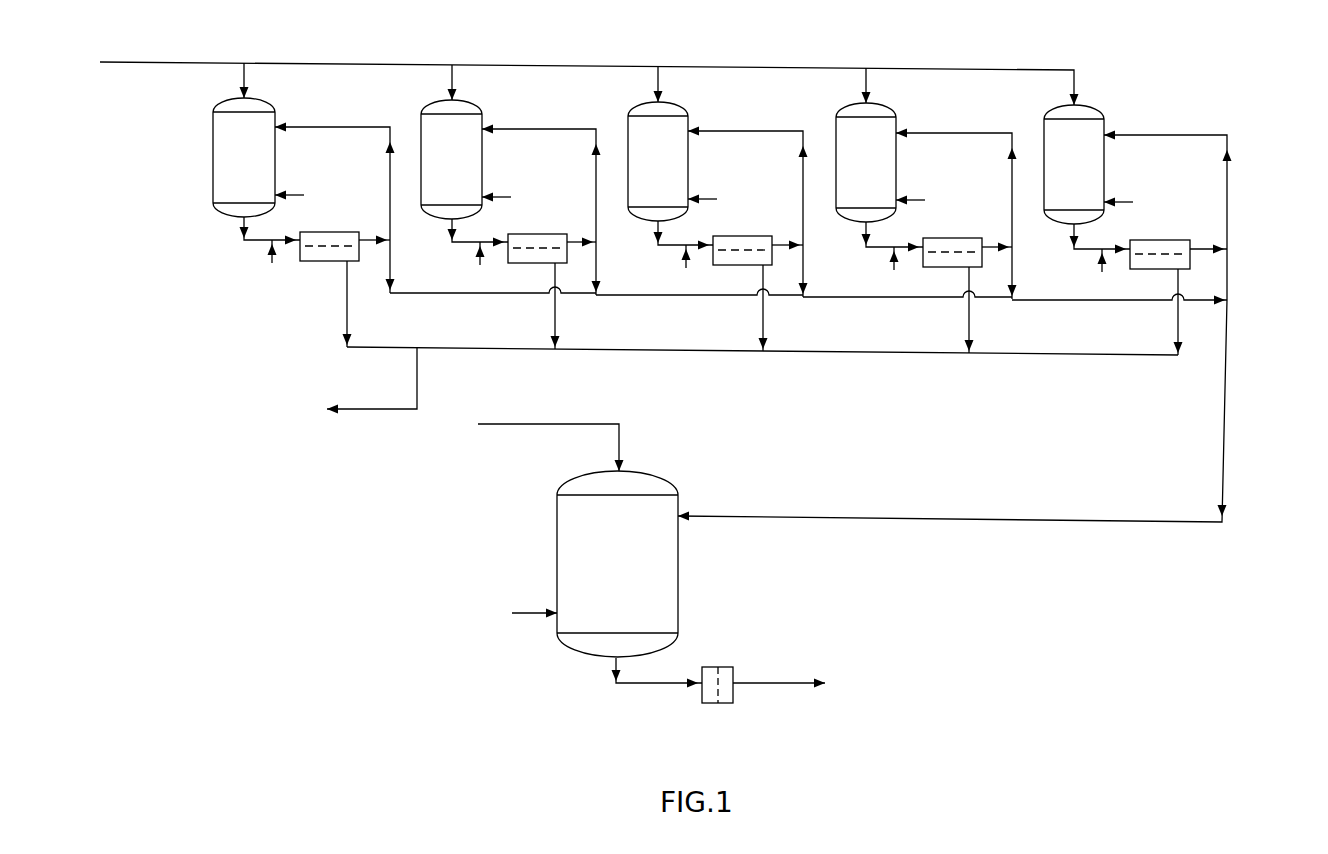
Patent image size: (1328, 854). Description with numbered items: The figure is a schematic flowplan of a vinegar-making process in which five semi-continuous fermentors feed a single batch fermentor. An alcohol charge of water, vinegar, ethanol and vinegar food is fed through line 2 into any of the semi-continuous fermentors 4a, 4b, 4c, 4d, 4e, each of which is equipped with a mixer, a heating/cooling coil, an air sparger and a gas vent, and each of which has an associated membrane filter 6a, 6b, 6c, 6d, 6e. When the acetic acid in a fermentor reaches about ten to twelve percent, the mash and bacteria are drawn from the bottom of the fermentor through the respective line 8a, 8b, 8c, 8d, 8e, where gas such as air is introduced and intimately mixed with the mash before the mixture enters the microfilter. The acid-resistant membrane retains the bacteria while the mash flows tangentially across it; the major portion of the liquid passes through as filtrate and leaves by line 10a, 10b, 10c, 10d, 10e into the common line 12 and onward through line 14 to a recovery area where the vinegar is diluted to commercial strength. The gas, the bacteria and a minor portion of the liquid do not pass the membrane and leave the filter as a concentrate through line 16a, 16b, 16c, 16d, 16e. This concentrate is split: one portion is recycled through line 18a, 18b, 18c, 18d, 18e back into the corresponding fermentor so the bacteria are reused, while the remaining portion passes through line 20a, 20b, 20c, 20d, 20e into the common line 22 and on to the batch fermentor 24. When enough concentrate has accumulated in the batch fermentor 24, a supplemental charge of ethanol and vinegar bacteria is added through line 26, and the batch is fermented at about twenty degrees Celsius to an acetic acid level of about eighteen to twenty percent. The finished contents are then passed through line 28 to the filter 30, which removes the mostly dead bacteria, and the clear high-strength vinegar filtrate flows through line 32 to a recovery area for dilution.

The alcohol charge line 2 is at (408, 63).
The semi-continuous fermentor 4a is at (213, 160).
The semi-continuous fermentor 4b is at (482, 155).
The semi-continuous fermentor 4c is at (688, 159).
The semi-continuous fermentor 4d is at (896, 160).
The semi-continuous fermentor 4e is at (1104, 162).
The membrane filter 6a is at (309, 232).
The membrane filter 6b is at (513, 234).
The membrane filter 6c is at (718, 236).
The membrane filter 6d is at (928, 238).
The membrane filter 6e is at (1135, 240).
The mash transfer line 8a is at (250, 243).
The mash transfer line 8b is at (457, 245).
The mash transfer line 8c is at (658, 248).
The mash transfer line 8d is at (866, 250).
The mash transfer line 8e is at (1074, 252).
The filtrate line 10a is at (345, 311).
The filtrate line 10b is at (555, 273).
The filtrate line 10c is at (763, 276).
The filtrate line 10d is at (969, 280).
The filtrate line 10e is at (1181, 285).
The filtrate collection line 12 is at (388, 351).
The vinegar product line 14 is at (385, 412).
The concentrate line 16a is at (367, 240).
The concentrate line 16b is at (575, 242).
The concentrate line 16c is at (781, 245).
The concentrate line 16d is at (990, 247).
The concentrate line 16e is at (1204, 249).
The concentrate recycle line 18a is at (392, 138).
The concentrate recycle line 18b is at (598, 140).
The concentrate recycle line 18c is at (805, 142).
The concentrate recycle line 18d is at (1013, 144).
The concentrate recycle line 18e is at (1229, 207).
The concentrate transfer line 20a is at (391, 265).
The concentrate transfer line 20b is at (597, 267).
The concentrate transfer line 20c is at (804, 269).
The concentrate transfer line 20d is at (1013, 271).
The concentrate transfer line 20e is at (1229, 263).
The concentrate collection line 22 is at (461, 297).
The batch fermentor 24 is at (678, 575).
The supplemental ethanol charge line 26 is at (612, 423).
The fermentor discharge line 28 is at (640, 683).
The filter 30 is at (716, 667).
The vinegar filtrate line 32 is at (786, 683).